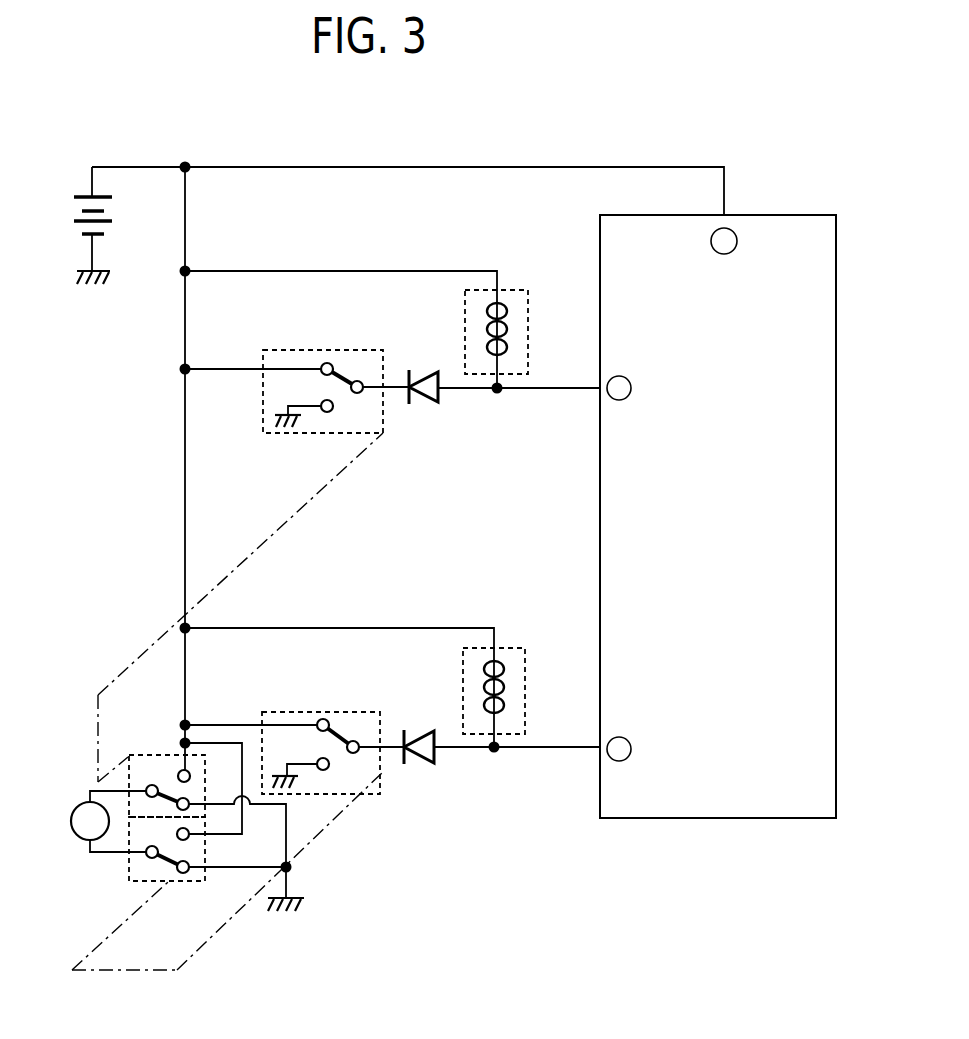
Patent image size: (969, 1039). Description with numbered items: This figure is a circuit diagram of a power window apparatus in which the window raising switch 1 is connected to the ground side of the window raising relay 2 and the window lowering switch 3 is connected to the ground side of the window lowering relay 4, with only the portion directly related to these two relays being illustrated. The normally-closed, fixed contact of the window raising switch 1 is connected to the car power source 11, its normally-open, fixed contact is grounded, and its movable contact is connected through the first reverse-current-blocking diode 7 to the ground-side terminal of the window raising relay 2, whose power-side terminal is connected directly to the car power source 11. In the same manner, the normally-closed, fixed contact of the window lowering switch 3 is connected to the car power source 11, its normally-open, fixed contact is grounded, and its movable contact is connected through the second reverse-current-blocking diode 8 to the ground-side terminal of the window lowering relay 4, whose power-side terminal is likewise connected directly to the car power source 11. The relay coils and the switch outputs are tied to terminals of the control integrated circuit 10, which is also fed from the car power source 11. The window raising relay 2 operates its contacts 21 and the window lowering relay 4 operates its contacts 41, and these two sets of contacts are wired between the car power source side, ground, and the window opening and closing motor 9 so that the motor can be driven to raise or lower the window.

The window raising switch 1 is at (365, 350).
The window raising relay 2 is at (520, 291).
The window lowering switch 3 is at (369, 712).
The window lowering relay 4 is at (513, 648).
The first reverse-current-blocking diode 7 is at (430, 405).
The second reverse-current-blocking diode 8 is at (426, 764).
The window opening and closing motor 9 is at (72, 812).
The control integrated circuit 10 is at (800, 215).
The car power source 11 is at (122, 213).
The contacts of the window raising relay 21 is at (158, 755).
The contacts of the window lowering relay 41 is at (181, 883).